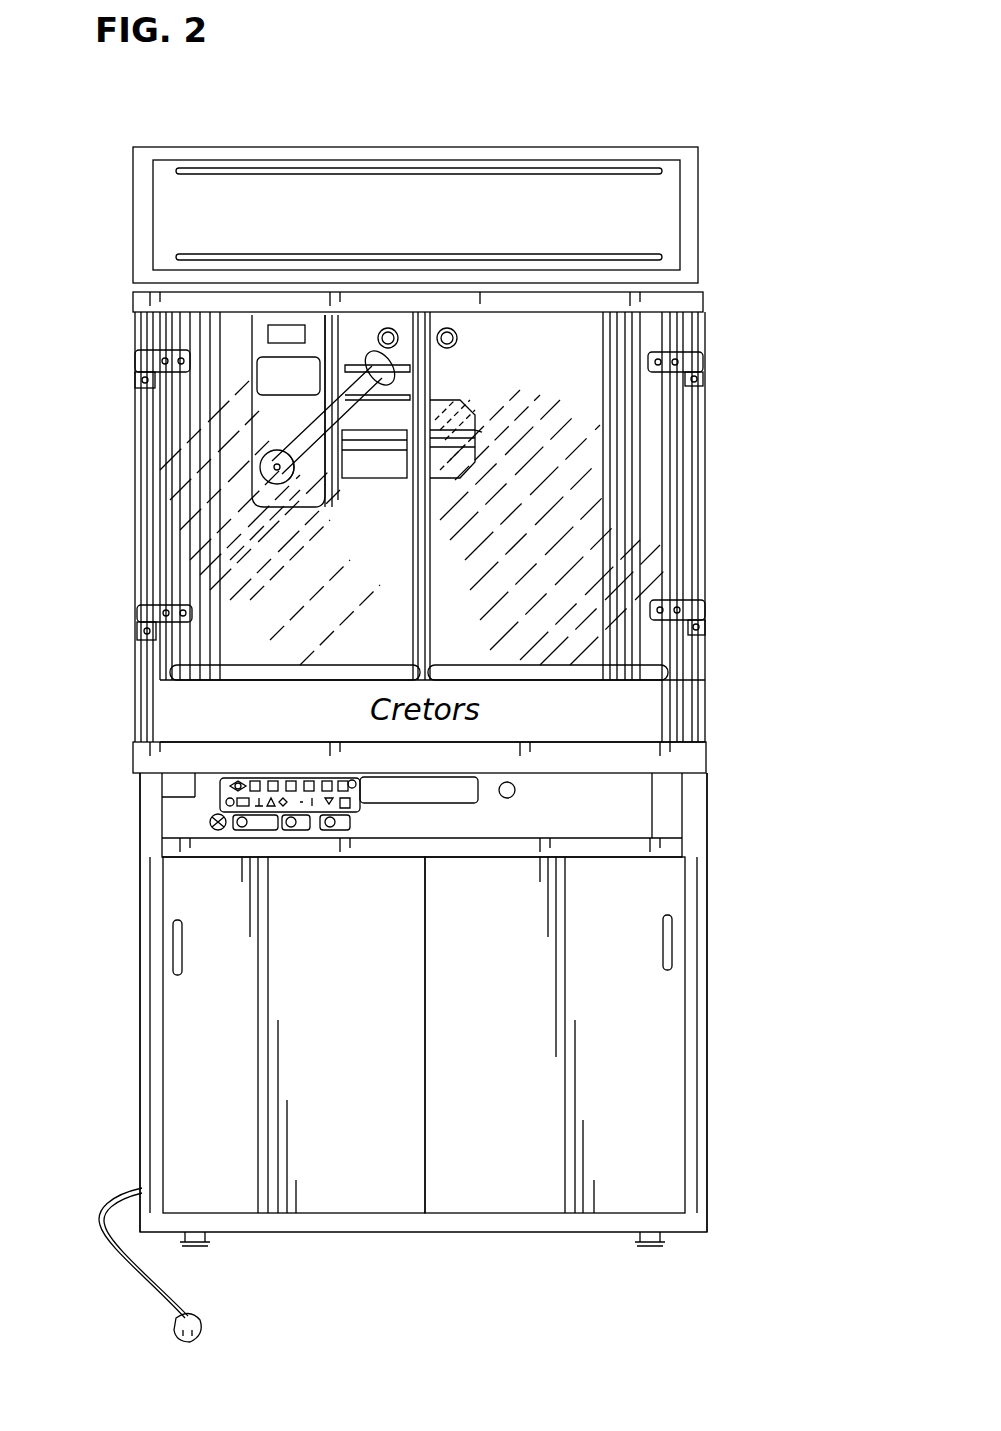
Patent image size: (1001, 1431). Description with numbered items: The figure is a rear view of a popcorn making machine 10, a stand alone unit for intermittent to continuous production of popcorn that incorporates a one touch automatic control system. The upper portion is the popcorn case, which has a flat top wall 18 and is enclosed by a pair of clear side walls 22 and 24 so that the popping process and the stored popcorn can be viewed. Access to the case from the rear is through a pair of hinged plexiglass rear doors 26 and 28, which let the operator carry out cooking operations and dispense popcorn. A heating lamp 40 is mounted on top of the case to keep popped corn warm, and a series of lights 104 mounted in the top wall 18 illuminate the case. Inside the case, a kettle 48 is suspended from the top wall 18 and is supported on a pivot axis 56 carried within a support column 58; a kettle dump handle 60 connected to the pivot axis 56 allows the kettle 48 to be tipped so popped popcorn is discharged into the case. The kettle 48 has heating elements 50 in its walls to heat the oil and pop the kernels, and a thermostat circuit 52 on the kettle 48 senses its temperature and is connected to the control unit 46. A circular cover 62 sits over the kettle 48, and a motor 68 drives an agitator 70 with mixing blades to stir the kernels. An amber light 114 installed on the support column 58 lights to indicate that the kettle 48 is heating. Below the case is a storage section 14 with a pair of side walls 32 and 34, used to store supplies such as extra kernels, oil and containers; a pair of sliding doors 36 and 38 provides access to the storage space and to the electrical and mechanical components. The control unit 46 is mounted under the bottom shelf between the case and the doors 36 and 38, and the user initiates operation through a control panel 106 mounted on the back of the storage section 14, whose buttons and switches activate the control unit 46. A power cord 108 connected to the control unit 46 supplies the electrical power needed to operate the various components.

The popcorn making machine 10 is at (298, 80).
The flat top wall 18 is at (490, 147).
The lights 104 is at (625, 185).
The kettle dump handle 60 is at (372, 348).
The motor 68 is at (392, 328).
The cover 62 is at (455, 398).
The amber light 114 is at (282, 322).
The heating lamp 40 is at (680, 323).
The support column 58 is at (252, 367).
The kettle 48 is at (482, 432).
The hinged rear door 26 is at (633, 445).
The side wall 22 is at (705, 470).
The pivot axis 56 is at (260, 457).
The side wall 24 is at (135, 480).
The agitator 70 is at (395, 438).
The heating elements 50 is at (382, 478).
The thermostat circuit 52 is at (403, 480).
The hinged rear door 28 is at (168, 668).
The control unit 46 is at (690, 790).
The control panel 106 is at (180, 818).
The storage section 14 is at (693, 885).
The side wall 34 is at (140, 945).
The side wall 32 is at (707, 950).
The sliding door 36 is at (185, 1050).
The sliding door 38 is at (655, 1047).
The power cord 108 is at (188, 1314).